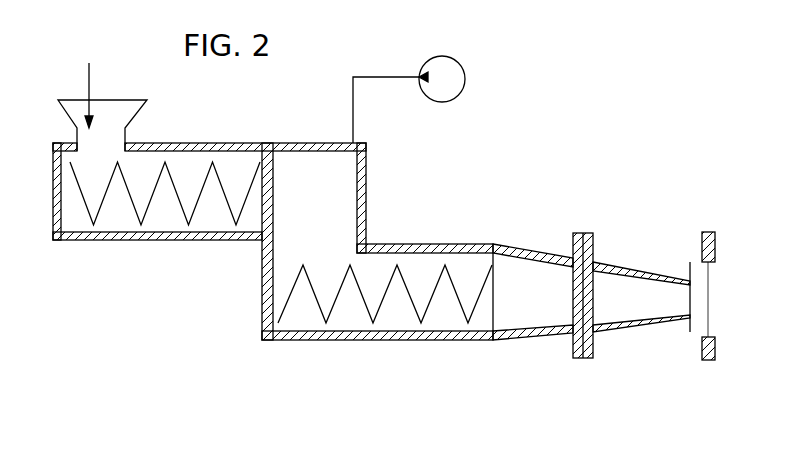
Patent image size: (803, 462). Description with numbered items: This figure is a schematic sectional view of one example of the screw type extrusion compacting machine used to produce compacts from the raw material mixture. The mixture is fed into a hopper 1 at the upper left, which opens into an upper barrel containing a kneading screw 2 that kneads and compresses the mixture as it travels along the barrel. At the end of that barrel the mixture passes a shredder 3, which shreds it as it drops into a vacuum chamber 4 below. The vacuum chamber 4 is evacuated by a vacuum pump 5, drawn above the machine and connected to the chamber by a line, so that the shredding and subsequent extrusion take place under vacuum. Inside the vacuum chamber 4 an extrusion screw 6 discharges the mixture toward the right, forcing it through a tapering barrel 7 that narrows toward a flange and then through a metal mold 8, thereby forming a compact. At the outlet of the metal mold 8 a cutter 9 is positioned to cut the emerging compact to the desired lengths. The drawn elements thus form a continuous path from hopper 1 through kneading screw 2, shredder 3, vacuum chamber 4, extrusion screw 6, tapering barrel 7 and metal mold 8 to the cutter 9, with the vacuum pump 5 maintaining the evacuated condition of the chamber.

The hopper 1 is at (110, 74).
The kneading screw 2 is at (145, 208).
The shredder 3 is at (283, 163).
The vacuum chamber 4 is at (350, 212).
The vacuum pump 5 is at (458, 80).
The extrusion screw 6 is at (343, 280).
The tapering barrel 7 is at (530, 252).
The metal mold 8 is at (645, 263).
The cutter 9 is at (708, 232).